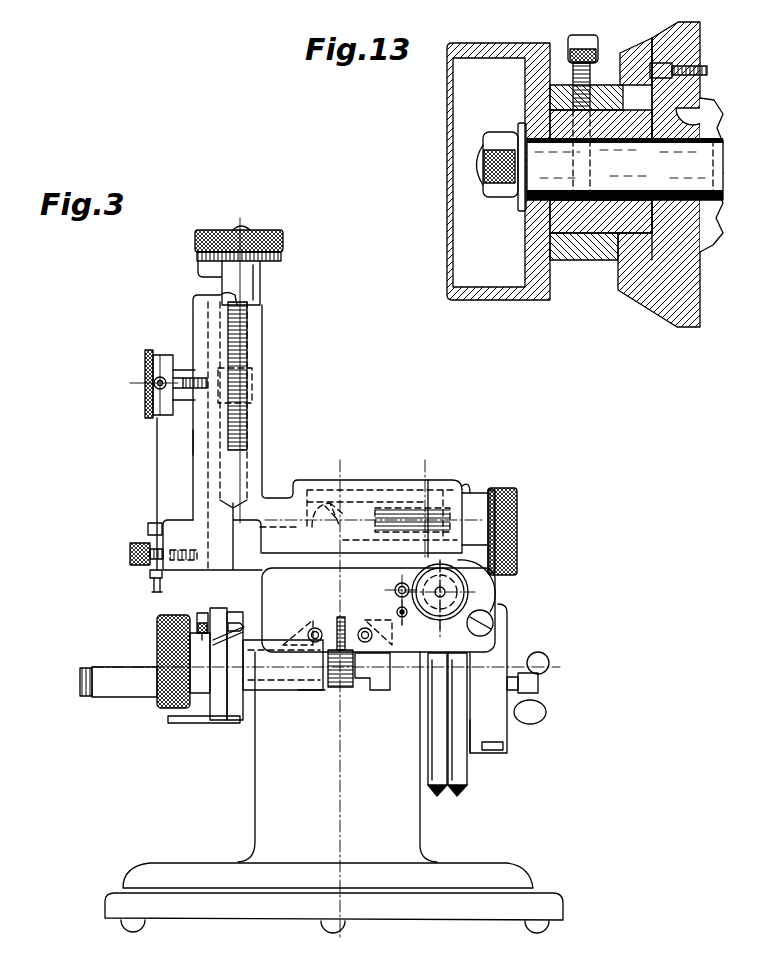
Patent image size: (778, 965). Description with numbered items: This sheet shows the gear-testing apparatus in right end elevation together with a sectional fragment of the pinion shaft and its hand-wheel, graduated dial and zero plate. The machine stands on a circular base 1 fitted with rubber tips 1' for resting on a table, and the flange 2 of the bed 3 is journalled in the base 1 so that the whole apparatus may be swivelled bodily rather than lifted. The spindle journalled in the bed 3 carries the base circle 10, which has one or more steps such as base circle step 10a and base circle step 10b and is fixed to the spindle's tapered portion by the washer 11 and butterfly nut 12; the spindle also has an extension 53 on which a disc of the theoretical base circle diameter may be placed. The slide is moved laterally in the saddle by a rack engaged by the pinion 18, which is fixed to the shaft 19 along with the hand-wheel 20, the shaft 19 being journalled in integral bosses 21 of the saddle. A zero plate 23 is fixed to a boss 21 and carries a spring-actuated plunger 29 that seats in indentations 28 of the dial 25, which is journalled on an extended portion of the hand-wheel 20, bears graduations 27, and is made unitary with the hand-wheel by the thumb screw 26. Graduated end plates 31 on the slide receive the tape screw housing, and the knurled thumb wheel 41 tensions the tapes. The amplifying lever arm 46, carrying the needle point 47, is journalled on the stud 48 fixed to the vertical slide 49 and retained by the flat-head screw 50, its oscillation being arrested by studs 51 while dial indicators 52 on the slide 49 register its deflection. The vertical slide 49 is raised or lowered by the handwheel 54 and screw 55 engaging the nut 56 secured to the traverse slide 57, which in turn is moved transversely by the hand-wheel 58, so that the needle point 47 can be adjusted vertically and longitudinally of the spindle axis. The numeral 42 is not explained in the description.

In FIG. 3, the base 1 is at (348, 903).
In FIG. 3, the rubber tips 1' is at (353, 935).
In FIG. 3, the flange 2 is at (515, 878).
In FIG. 3, the bed 3 is at (275, 804).
In FIG. 3, the base circle 10 is at (505, 656).
In FIG. 3, the base circle step 10a is at (503, 748).
In FIG. 3, the base circle step 10b is at (472, 780).
In FIG. 3, the washer 11 is at (546, 712).
In FIG. 3, the butterfly nut 12 is at (549, 663).
In FIG. 3, the pinion 18 is at (342, 690).
In FIG. 13, the shaft 19 is at (628, 185).
In FIG. 3, the shaft 19 is at (283, 672).
In FIG. 13, the hand-wheel 20 is at (455, 94).
In FIG. 3, the hand-wheel 20 is at (157, 633).
In FIG. 13, the integral bosses 21 is at (712, 242).
In FIG. 3, the integral bosses 21 is at (308, 692).
In FIG. 13, the zero plate 23 is at (668, 312).
In FIG. 3, the zero plate 23 is at (235, 700).
In FIG. 13, the dial 25 is at (622, 288).
In FIG. 3, the dial 25 is at (216, 700).
In FIG. 13, the thumb screw 26 is at (578, 42).
In FIG. 3, the thumb screw 26 is at (205, 613).
In FIG. 3, the graduations 27 is at (200, 676).
In FIG. 13, the indentations 28 is at (645, 60).
In FIG. 3, the indentations 28 is at (222, 628).
In FIG. 13, the spring-actuated plunger 29 is at (668, 40).
In FIG. 3, the spring-actuated plunger 29 is at (238, 620).
In FIG. 3, the graduated end plates 31 is at (500, 612).
In FIG. 3, the knurled thumb wheel 41 is at (495, 597).
In FIG. 3, the guide rods 42 is at (457, 797).
In FIG. 3, the amplifying lever arm 46 is at (157, 472).
In FIG. 3, the needle point 47 is at (142, 591).
In FIG. 3, the stud 48 is at (212, 536).
In FIG. 3, the vertical slide 49 is at (195, 442).
In FIG. 3, the flat-head screw 50 is at (122, 563).
In FIG. 3, the studs 51 is at (148, 528).
In FIG. 3, the dial indicators 52 is at (145, 366).
In FIG. 3, the extension 53 is at (118, 697).
In FIG. 3, the handwheel 54 is at (283, 241).
In FIG. 3, the screw 55 is at (248, 332).
In FIG. 3, the nut 56 is at (357, 478).
In FIG. 3, the traverse slide 57 is at (323, 478).
In FIG. 3, the hand-wheel 58 is at (505, 485).